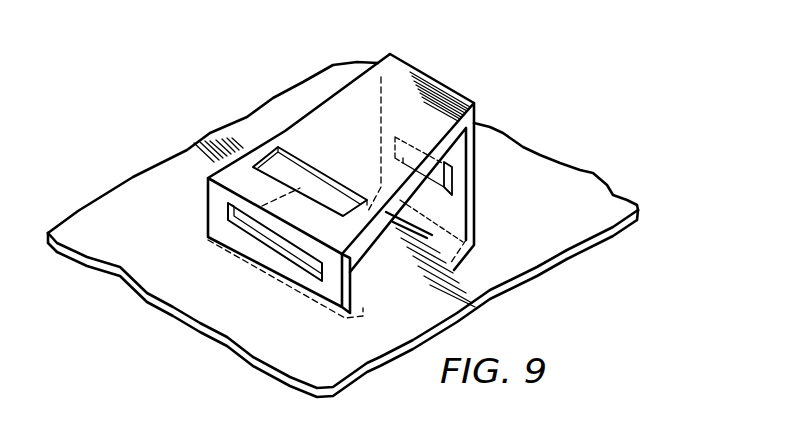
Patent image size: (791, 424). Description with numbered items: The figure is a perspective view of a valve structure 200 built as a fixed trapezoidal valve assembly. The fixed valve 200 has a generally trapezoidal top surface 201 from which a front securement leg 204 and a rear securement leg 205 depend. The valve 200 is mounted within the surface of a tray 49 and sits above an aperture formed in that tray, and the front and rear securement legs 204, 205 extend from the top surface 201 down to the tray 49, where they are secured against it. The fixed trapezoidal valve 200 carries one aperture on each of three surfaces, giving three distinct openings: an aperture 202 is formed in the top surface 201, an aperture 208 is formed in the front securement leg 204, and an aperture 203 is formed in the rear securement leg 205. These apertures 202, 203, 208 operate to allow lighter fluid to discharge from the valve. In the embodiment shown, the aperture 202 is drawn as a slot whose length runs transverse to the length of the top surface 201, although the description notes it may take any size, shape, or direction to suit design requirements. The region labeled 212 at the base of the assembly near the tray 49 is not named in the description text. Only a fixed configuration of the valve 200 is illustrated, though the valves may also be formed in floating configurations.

The tray 49 is at (590, 188).
The valve structure 200 is at (353, 170).
The top surface 201 is at (397, 78).
The aperture 202 is at (300, 183).
The aperture 203 is at (278, 237).
The front securement leg 204 is at (476, 152).
The rear securement leg 205 is at (268, 186).
The aperture 208 is at (447, 180).
The board slot opening 212 is at (367, 249).